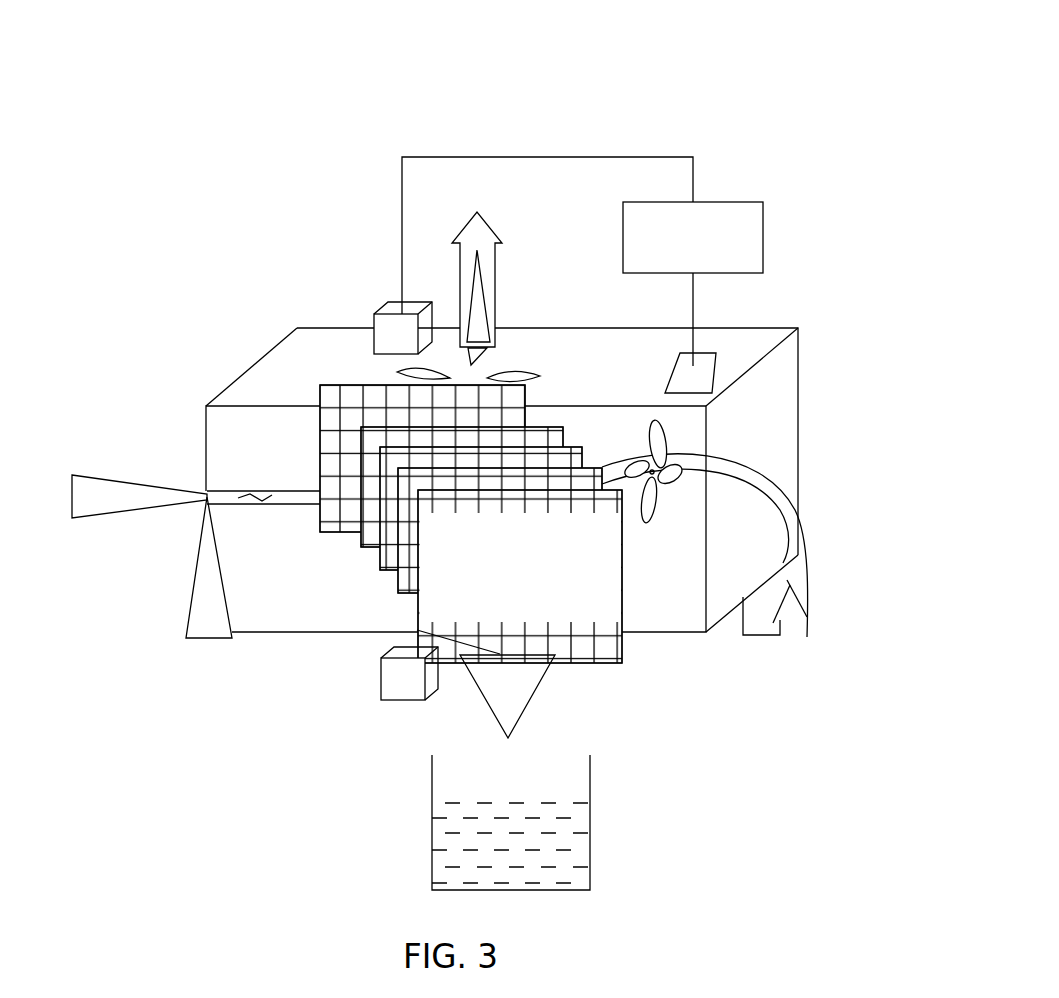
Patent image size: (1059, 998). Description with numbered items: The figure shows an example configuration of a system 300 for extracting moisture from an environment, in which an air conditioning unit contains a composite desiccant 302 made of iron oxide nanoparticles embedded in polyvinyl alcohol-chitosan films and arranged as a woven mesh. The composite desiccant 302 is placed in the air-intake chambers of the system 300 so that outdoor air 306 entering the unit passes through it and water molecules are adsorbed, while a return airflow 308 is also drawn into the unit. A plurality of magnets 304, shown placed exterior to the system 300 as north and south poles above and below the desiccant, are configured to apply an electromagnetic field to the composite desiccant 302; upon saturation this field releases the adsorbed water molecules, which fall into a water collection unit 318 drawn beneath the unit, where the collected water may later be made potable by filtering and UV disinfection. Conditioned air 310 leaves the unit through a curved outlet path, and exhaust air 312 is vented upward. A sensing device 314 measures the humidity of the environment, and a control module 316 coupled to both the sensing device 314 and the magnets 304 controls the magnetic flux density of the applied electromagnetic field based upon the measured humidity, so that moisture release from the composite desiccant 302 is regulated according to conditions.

The system 300 is at (815, 97).
The composite desiccant 302 is at (503, 604).
The magnets 304 is at (398, 300).
The outdoor airflow 306 is at (97, 494).
The return airflow 308 is at (207, 625).
The conditioned airflow 310 is at (800, 650).
The exhaust airflow 312 is at (490, 270).
The sensing device 314 is at (718, 353).
The control module 316 is at (747, 200).
The water collection unit 318 is at (590, 862).